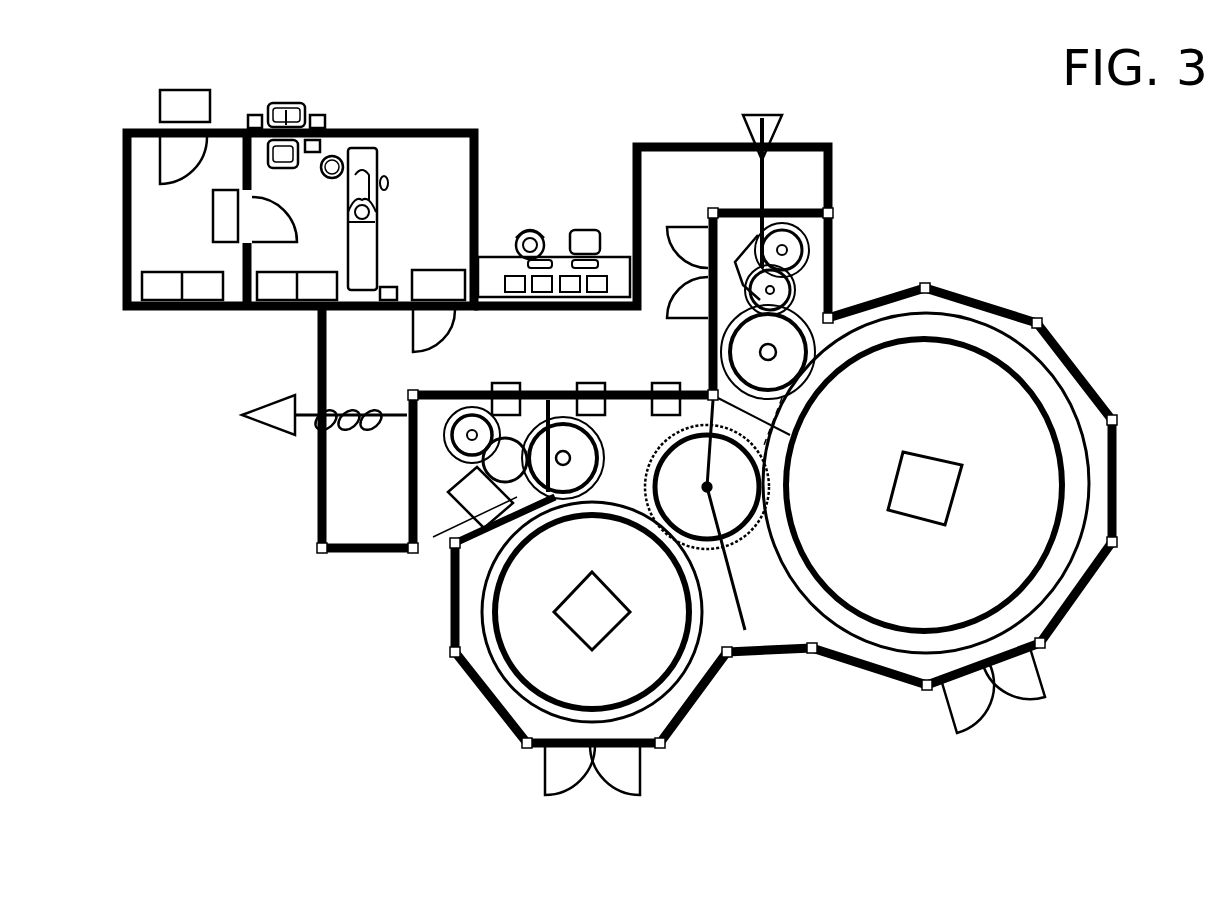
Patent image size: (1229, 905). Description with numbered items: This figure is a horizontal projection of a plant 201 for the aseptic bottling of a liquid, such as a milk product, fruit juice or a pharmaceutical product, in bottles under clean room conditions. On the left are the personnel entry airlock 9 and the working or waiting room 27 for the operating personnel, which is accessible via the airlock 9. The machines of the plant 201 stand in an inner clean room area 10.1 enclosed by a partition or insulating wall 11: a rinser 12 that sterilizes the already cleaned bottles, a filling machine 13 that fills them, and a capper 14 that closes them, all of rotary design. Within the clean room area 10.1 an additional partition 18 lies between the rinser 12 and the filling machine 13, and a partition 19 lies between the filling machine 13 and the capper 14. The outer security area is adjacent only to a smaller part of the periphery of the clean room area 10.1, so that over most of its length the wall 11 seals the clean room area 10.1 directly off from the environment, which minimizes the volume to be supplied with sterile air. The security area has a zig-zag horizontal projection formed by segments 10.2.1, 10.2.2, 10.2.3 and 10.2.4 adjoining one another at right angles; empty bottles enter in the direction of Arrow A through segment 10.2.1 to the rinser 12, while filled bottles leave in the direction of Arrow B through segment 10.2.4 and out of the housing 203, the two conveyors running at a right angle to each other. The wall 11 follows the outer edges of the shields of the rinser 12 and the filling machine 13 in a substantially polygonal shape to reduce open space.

The personnel entry airlock 9 is at (172, 222).
The working or waiting room 27 is at (438, 162).
The segment of the security area 10.2.3 is at (512, 333).
The segment of the security area 10.2.2 is at (652, 262).
The segment of the security area 10.2.1 is at (795, 178).
The segment of the security area 10.2.4 is at (342, 508).
The partition or insulating wall 11 is at (828, 262).
The capper 14 is at (507, 463).
The partition 19 is at (448, 603).
The filling machine 13 is at (640, 653).
The clean room area 10.1 is at (723, 600).
The partition 18 is at (795, 620).
The housing 203 is at (958, 260).
The rinser 12 is at (1018, 440).
The plant 201 is at (352, 746).